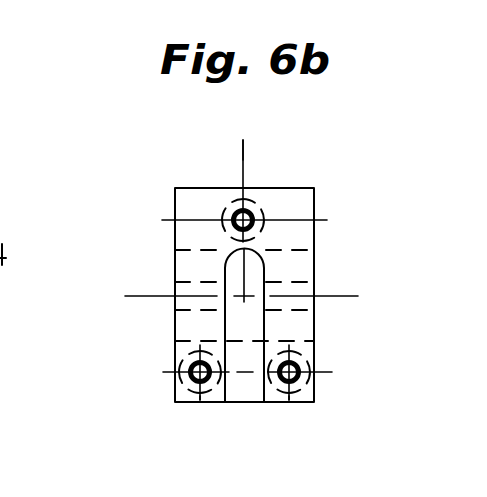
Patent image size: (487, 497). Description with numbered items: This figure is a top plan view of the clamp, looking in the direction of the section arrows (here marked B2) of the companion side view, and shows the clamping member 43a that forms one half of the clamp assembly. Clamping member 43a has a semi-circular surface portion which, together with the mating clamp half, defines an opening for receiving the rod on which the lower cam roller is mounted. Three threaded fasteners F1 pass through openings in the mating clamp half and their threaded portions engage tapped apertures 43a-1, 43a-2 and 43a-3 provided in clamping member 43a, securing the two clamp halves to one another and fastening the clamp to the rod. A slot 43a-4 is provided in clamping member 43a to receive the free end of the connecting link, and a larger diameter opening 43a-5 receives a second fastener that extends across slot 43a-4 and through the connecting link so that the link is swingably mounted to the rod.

The clamping member 43a is at (244, 296).
The tapped aperture 43a-1 is at (270, 212).
The tapped aperture 43a-2 is at (318, 357).
The tapped aperture 43a-3 is at (180, 376).
The slot 43a-4 is at (226, 398).
The larger diameter opening 43a-5 is at (193, 313).
The block B2 is at (174, 265).
The threaded fastener F1 is at (258, 196).